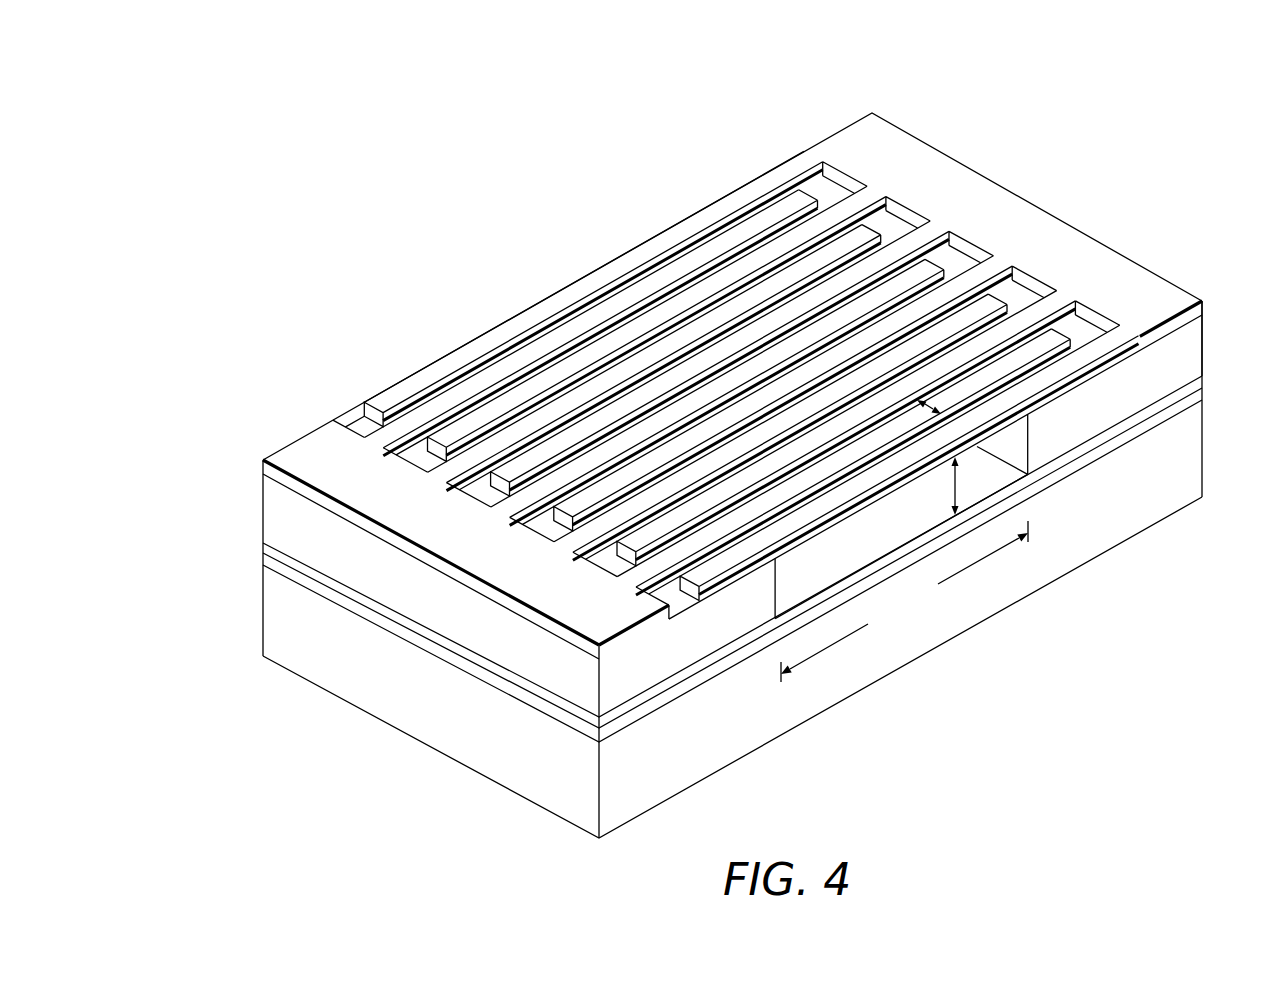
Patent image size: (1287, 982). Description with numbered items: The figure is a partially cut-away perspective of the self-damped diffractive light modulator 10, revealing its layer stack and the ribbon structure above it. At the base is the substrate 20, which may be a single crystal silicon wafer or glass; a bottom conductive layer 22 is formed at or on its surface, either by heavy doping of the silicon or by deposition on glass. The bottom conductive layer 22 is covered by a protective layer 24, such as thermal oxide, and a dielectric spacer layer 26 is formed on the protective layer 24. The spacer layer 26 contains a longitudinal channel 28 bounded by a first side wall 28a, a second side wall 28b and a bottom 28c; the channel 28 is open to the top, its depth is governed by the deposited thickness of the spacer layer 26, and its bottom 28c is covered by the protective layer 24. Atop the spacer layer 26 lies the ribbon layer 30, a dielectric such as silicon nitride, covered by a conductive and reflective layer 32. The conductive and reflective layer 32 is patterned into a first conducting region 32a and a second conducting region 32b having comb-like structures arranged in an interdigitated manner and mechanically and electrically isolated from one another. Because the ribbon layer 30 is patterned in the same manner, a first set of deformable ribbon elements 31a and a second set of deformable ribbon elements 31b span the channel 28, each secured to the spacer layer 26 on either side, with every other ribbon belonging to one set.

The self-damped diffractive light modulator 10 is at (476, 156).
The substrate 20 is at (532, 793).
The bottom conductive layer 22 is at (312, 584).
The protective layer 24 is at (300, 566).
The dielectric spacer layer 26 is at (1190, 354).
The channel 28 is at (904, 541).
The first side wall 28a is at (1001, 458).
The second side wall 28b is at (780, 587).
The bottom 28c is at (846, 552).
The ribbon layer 30 is at (288, 486).
The first set of deformable ribbon elements 31a is at (700, 358).
The second set of deformable ribbon elements 31b is at (608, 450).
The conductive and reflective layer 32 is at (263, 459).
The first conducting region 32a is at (975, 188).
The second conducting region 32b is at (322, 448).